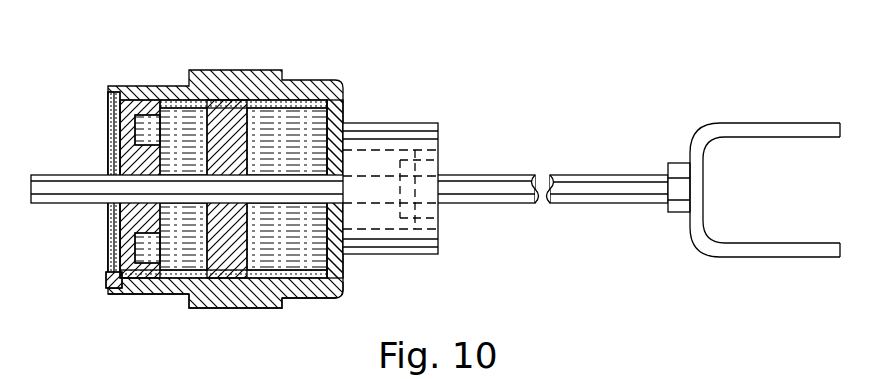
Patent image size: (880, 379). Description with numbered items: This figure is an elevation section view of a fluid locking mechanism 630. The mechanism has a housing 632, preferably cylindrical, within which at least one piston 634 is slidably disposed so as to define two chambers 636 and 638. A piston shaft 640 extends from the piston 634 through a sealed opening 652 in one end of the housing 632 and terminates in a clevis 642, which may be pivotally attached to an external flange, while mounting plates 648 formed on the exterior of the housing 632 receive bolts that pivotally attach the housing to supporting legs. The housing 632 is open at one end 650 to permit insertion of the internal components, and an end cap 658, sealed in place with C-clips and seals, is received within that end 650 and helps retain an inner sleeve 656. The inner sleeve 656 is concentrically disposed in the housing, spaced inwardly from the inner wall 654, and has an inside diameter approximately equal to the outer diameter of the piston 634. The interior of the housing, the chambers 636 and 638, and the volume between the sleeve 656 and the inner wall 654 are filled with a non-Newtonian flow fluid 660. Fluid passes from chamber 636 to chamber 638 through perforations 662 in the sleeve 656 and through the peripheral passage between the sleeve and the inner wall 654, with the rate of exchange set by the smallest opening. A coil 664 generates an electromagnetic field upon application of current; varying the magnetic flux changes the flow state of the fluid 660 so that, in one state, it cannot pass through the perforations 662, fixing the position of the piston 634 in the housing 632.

The fluid locking mechanism 630 is at (302, 191).
The housing 632 is at (245, 312).
The piston 634 is at (258, 238).
The chamber 636 is at (185, 155).
The chamber 638 is at (343, 98).
The piston shaft 640 is at (580, 182).
The clevis 642 is at (707, 253).
The mounting plates 648 is at (190, 300).
The open end 650 is at (108, 279).
The sealed opening 652 is at (395, 172).
The inner wall 654 is at (302, 137).
The inner sleeve 656 is at (203, 112).
The end cap 658 is at (112, 228).
The non-Newtonian flow fluid 660 is at (323, 290).
The perforations 662 is at (180, 138).
The coil 664 is at (140, 276).